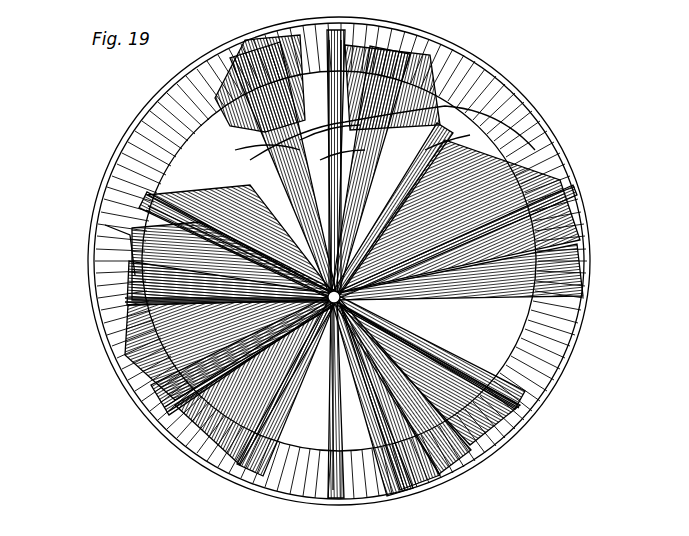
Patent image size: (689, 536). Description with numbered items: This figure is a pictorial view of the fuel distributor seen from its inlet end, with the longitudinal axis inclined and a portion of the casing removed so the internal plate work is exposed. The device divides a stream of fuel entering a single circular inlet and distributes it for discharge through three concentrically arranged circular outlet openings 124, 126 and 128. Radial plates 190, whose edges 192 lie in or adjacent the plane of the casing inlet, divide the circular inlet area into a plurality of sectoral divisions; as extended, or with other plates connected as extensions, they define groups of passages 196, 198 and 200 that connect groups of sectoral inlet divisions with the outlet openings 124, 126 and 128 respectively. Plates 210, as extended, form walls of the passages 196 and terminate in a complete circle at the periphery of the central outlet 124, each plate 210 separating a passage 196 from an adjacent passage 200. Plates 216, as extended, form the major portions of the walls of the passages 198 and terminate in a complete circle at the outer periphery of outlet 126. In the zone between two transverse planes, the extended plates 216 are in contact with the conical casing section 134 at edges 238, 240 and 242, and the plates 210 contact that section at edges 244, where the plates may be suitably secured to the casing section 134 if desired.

The central outlet opening 124 is at (300, 170).
The outlet opening 126 is at (400, 108).
The outlet opening 128 is at (487, 145).
The conical casing section 134 is at (548, 163).
The radial plates 190 is at (566, 336).
The plate edges 192 is at (345, 189).
The passages 196 is at (324, 170).
The passages 198 is at (386, 130).
The passages 200 is at (476, 138).
The plates 210 is at (132, 392).
The plates 216 is at (150, 200).
The edge 238 is at (113, 235).
The edge 240 is at (133, 253).
The edge 242 is at (120, 273).
The edge 244 is at (110, 343).